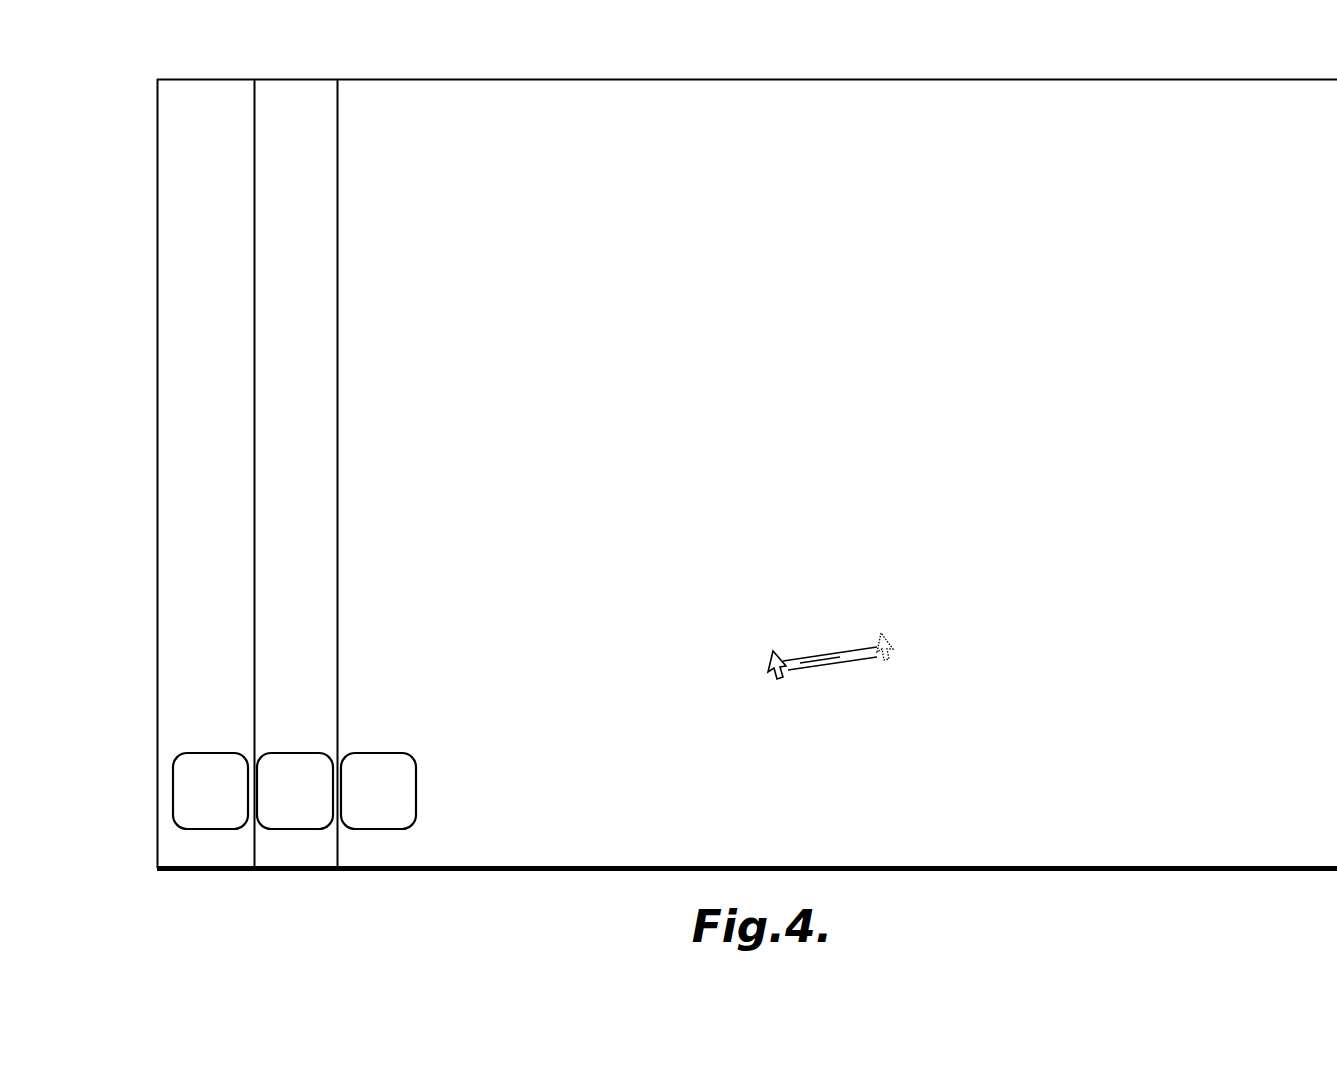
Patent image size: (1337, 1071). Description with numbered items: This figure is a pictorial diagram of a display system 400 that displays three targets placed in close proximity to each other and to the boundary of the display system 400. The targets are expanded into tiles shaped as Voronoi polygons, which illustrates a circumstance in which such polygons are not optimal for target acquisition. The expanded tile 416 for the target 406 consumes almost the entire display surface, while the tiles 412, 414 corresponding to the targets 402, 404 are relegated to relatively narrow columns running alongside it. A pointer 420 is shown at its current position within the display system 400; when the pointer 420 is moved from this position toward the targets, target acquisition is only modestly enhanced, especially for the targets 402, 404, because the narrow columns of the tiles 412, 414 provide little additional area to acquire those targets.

The display system 400 is at (1042, 80).
The target 402 is at (200, 753).
The target 404 is at (293, 753).
The target 406 is at (385, 753).
The tile 412 is at (193, 172).
The tile 414 is at (285, 172).
The expanded tile 416 is at (378, 172).
The pointer 420 is at (774, 652).